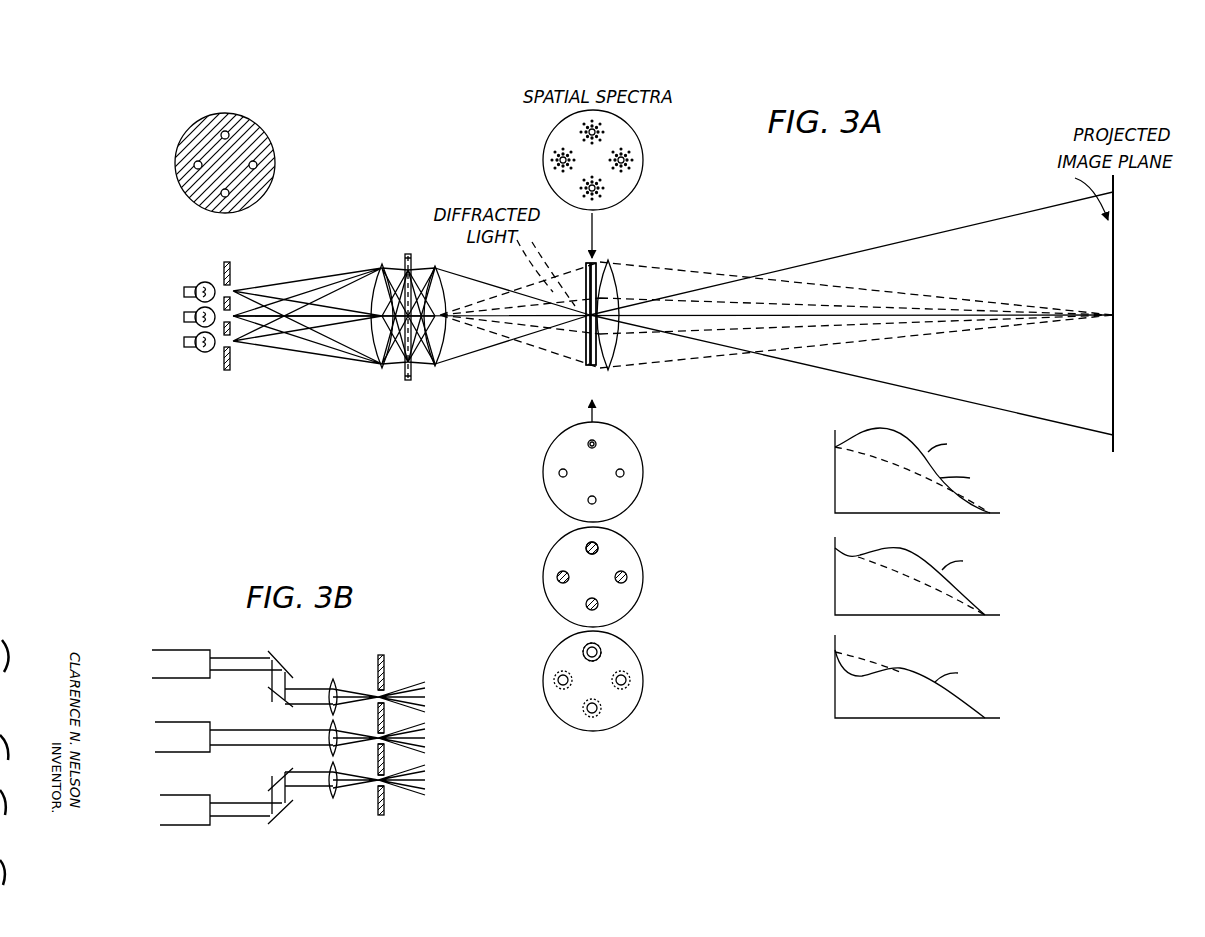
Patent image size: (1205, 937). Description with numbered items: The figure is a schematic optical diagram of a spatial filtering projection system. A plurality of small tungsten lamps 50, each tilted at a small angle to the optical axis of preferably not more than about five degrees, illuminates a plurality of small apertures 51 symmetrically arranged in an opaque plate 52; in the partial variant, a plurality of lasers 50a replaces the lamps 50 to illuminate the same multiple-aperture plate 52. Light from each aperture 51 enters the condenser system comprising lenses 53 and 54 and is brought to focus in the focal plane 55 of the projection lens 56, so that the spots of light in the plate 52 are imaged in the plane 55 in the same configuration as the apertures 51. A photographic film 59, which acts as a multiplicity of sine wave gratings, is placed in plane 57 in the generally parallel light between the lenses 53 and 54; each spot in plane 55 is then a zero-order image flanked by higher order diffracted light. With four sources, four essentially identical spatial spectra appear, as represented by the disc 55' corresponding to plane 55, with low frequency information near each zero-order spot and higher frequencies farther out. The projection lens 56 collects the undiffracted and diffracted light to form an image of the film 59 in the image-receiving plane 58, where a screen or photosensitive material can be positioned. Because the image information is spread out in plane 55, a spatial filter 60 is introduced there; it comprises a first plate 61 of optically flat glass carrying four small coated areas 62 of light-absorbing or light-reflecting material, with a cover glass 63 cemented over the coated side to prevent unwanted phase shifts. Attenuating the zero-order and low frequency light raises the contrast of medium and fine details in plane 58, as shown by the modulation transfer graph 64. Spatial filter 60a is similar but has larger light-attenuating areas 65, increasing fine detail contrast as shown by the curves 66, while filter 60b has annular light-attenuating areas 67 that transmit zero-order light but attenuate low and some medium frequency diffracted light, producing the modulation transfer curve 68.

In FIG. 3A, the tungsten lamps 50 is at (184, 343).
In FIG. 3B, the lasers 50a is at (178, 651).
In FIG. 3A, the apertures 51 is at (232, 134).
In FIG. 3B, the apertures 51 is at (388, 787).
In FIG. 3A, the opaque plate 52 is at (178, 175).
In FIG. 3B, the opaque plate 52 is at (384, 667).
In FIG. 3A, the condenser lens 53 is at (379, 266).
In FIG. 3A, the condenser lens 54 is at (438, 362).
In FIG. 3A, the focal plane 55 is at (618, 235).
In FIG. 3A, the disc 55' is at (614, 160).
In FIG. 3A, the projection lens 56 is at (615, 354).
In FIG. 3A, the plane 57 is at (408, 251).
In FIG. 3A, the image-receiving plane 58 is at (1116, 245).
In FIG. 3A, the photographic film 59 is at (404, 376).
In FIG. 3A, the spatial filter 60 is at (580, 336).
In FIG. 3A, the spatial filter 60a is at (668, 598).
In FIG. 3A, the spatial filter 60b is at (649, 691).
In FIG. 3A, the first plate 61 is at (596, 367).
In FIG. 3A, the coated areas 62 is at (597, 443).
In FIG. 3A, the cover glass 63 is at (587, 364).
In FIG. 3A, the graph 64 is at (831, 494).
In FIG. 3A, the light-attenuating areas 65 is at (599, 549).
In FIG. 3A, the modulation transfer curves 66 is at (831, 590).
In FIG. 3A, the annular light-attenuating areas 67 is at (601, 653).
In FIG. 3A, the modulation transfer curve 68 is at (833, 704).